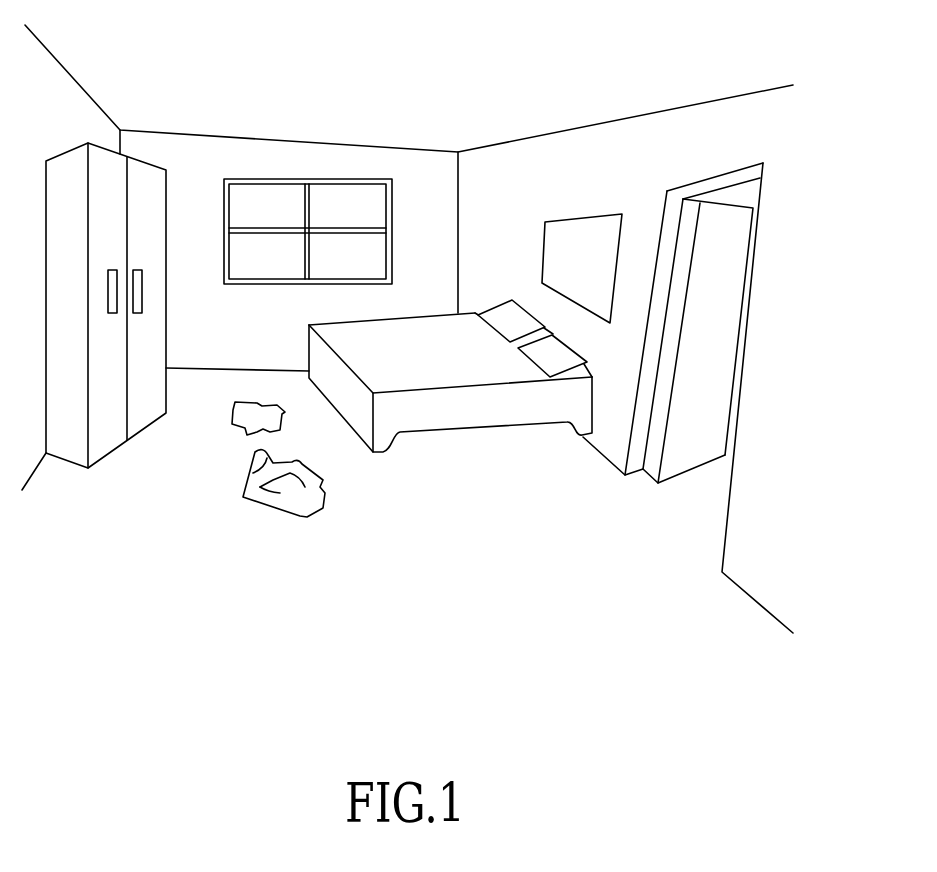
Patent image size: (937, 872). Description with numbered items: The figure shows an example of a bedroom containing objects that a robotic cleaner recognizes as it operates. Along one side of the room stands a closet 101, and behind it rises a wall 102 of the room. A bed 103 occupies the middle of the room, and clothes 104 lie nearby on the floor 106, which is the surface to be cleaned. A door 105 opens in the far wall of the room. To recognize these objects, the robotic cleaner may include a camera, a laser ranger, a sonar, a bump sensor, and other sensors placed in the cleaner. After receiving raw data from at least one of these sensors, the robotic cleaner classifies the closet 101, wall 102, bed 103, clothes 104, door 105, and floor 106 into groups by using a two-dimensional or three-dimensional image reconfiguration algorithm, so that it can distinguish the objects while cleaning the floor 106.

The closet 101 is at (166, 326).
The wall 102 is at (400, 172).
The bed 103 is at (473, 428).
The clothes 104 is at (249, 476).
The door 105 is at (743, 304).
The floor 106 is at (438, 552).